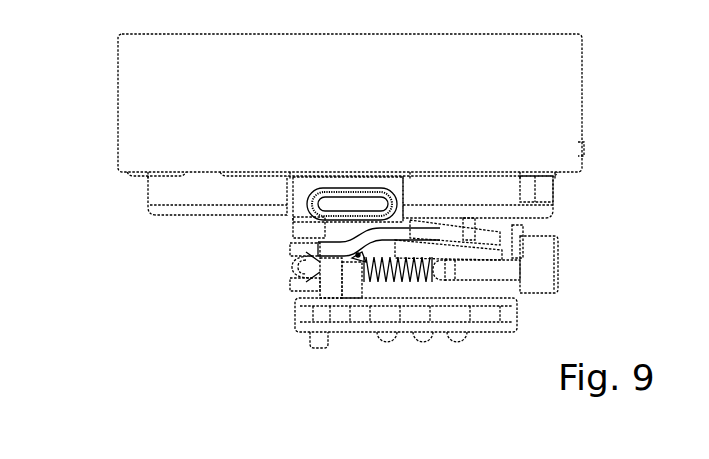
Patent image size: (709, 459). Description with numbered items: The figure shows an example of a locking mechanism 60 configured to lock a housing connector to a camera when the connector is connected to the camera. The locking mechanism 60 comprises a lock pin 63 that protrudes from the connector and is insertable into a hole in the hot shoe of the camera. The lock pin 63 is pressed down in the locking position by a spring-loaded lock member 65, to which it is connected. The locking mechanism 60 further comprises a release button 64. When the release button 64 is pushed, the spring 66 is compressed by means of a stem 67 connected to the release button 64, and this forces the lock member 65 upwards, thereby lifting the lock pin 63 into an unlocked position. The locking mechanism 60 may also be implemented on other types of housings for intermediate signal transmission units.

The locking mechanism 60 is at (262, 277).
The lock pin 63 is at (314, 344).
The release button 64 is at (559, 258).
The lock member 65 is at (358, 255).
The spring 66 is at (407, 270).
The stem 67 is at (490, 260).